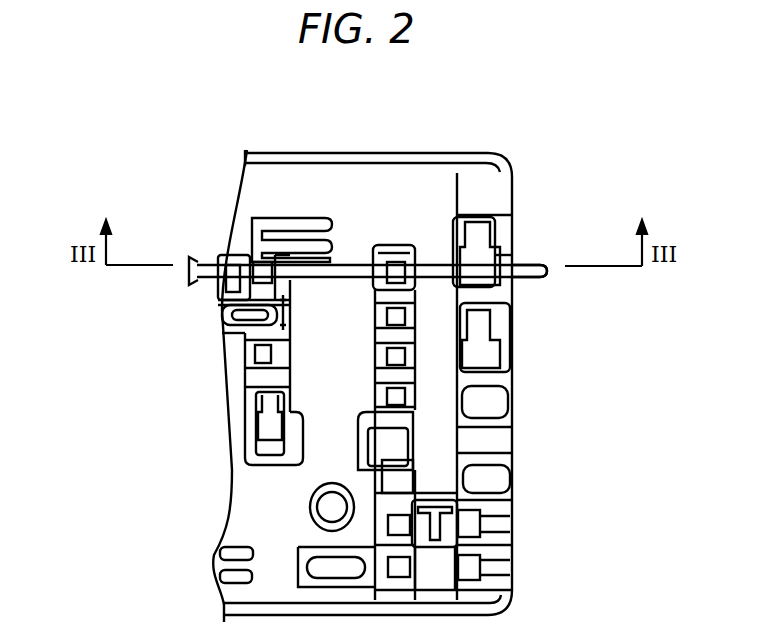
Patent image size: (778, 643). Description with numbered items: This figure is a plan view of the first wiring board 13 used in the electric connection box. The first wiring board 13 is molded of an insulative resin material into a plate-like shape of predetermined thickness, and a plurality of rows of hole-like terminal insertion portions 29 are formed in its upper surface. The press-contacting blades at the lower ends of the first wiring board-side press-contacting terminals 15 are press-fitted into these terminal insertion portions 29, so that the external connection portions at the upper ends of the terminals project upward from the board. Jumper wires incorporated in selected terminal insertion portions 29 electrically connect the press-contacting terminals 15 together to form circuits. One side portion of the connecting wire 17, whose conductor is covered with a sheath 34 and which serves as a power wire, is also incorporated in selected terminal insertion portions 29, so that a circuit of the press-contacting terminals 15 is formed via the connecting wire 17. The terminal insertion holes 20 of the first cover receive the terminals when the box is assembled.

The first wiring board 13 is at (482, 154).
The first wiring board-side press-contacting terminal 15 is at (263, 255).
The connecting wire 17 is at (537, 278).
The terminal insertion hole 20 is at (495, 250).
The terminal insertion portion 29 is at (245, 315).
The sheath 34 is at (343, 267).